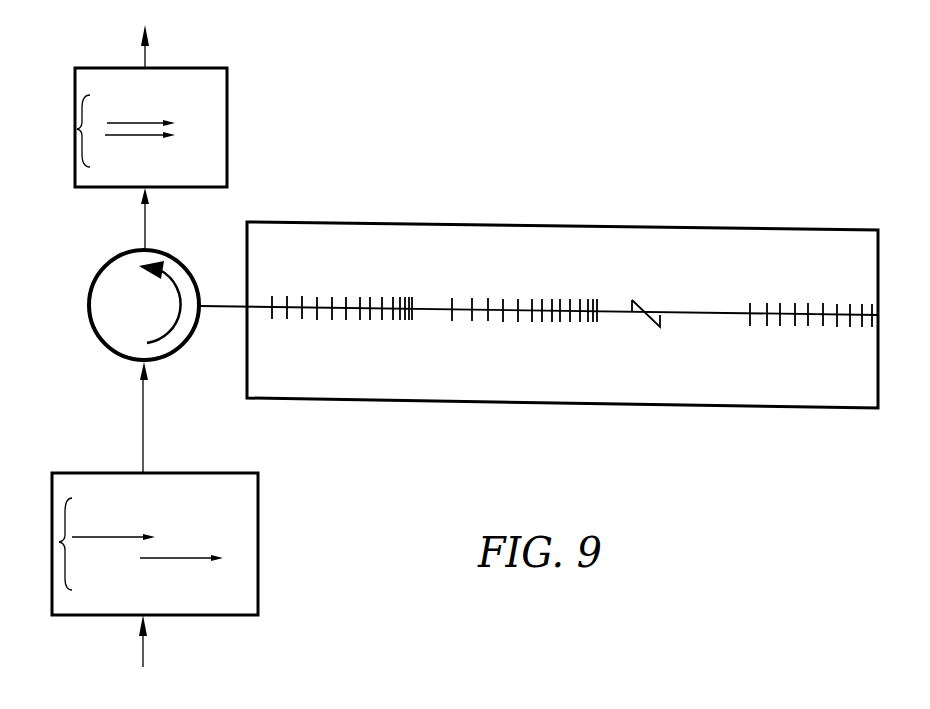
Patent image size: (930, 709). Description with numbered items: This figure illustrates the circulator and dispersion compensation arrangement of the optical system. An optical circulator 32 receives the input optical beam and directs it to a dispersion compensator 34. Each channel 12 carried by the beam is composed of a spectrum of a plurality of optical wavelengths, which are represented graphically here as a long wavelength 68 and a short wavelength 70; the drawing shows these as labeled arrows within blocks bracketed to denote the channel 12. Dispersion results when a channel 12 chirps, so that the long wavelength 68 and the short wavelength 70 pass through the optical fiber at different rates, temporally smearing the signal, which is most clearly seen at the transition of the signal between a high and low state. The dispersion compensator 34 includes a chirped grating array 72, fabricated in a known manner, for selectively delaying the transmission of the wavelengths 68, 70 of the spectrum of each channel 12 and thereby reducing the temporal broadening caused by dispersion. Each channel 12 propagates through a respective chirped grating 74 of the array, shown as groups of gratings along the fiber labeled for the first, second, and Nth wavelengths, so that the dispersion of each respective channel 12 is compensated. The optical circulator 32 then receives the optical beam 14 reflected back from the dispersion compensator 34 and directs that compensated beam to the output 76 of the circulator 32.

The channel 12 is at (77, 129).
The optical beam 14 is at (105, 68).
The circulator 32 is at (102, 305).
The dispersion compensator 34 is at (613, 205).
The long wavelength 68 is at (192, 82).
The short wavelength 70 is at (162, 178).
The chirped grating array 72 is at (731, 270).
The chirped grating 74 is at (352, 360).
The output 76 is at (135, 227).